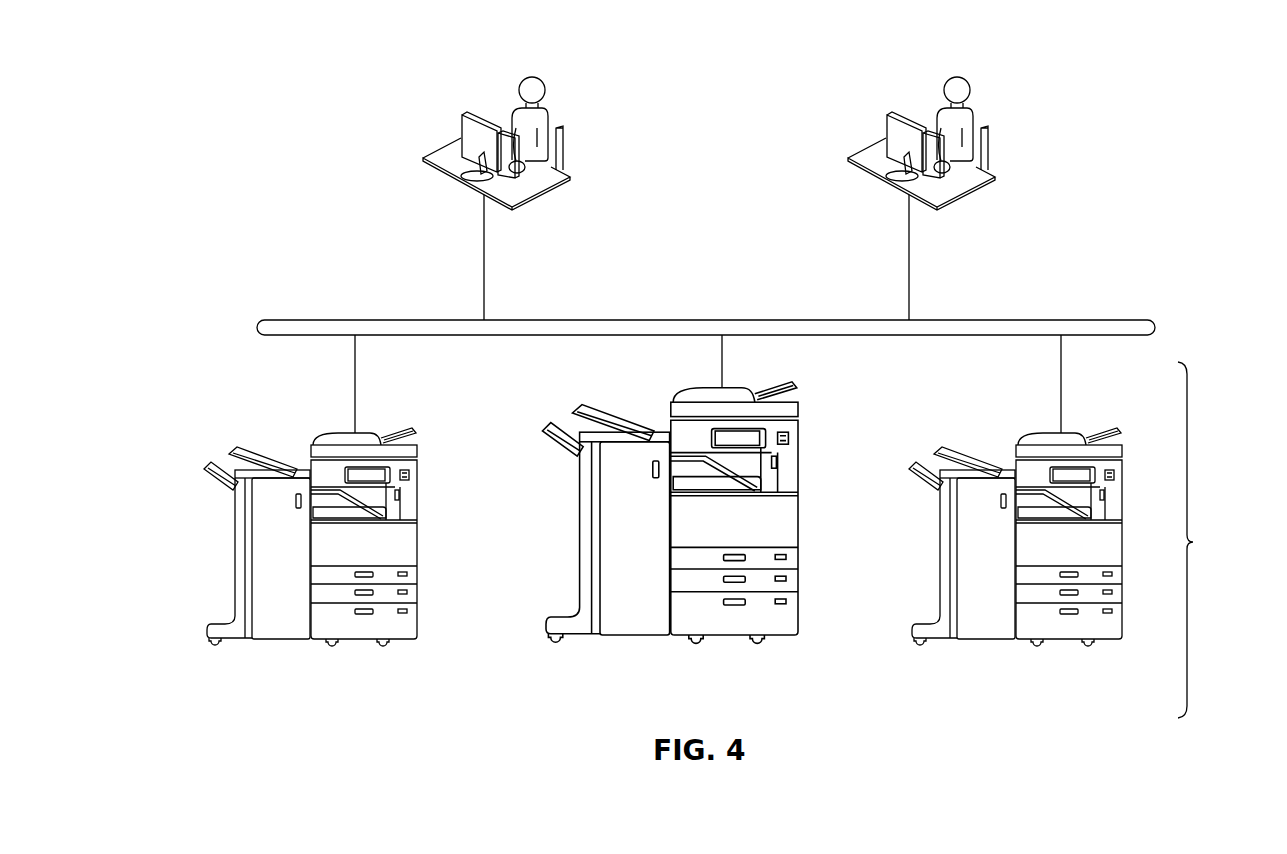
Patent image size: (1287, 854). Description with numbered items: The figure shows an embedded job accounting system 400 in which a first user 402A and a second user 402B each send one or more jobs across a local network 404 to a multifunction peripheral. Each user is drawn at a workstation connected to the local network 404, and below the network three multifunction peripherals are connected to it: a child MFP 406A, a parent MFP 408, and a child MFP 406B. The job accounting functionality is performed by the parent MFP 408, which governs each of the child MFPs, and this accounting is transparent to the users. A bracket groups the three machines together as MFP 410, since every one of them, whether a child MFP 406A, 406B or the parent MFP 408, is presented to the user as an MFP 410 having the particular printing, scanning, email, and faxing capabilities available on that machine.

The embedded job accounting system 400 is at (685, 55).
The first user 402A is at (553, 118).
The second user 402B is at (978, 118).
The local network 404 is at (823, 320).
The child MFP 406A is at (417, 622).
The child MFP 406B is at (1122, 618).
The parent MFP 408 is at (796, 615).
The multifunction peripheral 410 is at (1208, 540).